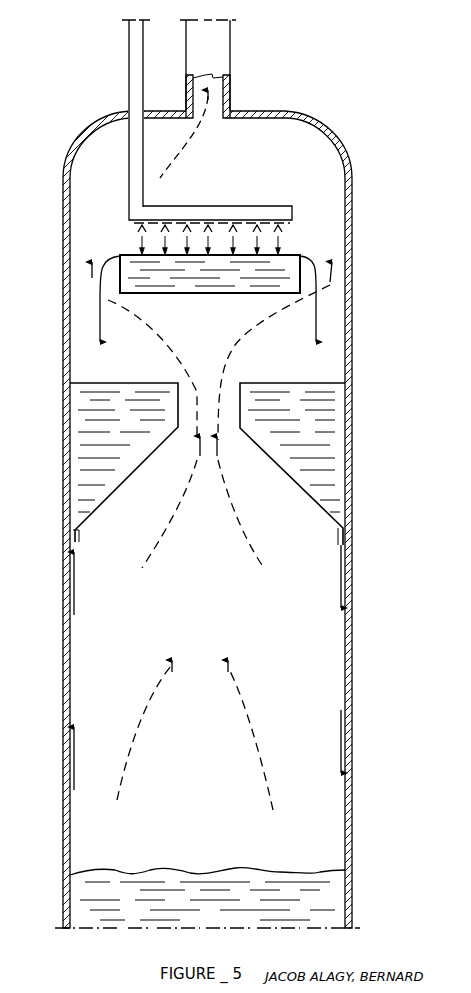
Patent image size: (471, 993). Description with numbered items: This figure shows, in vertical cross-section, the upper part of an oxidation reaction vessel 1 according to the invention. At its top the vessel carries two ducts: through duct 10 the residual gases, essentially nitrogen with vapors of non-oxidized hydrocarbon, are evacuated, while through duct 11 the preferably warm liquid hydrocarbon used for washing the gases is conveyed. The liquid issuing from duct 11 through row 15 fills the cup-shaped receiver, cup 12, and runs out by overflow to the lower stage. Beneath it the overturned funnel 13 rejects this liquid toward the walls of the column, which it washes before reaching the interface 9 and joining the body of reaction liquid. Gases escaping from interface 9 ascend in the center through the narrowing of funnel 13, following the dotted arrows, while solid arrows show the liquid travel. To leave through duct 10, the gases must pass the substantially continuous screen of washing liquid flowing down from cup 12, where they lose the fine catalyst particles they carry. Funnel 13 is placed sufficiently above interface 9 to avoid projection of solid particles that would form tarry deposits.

The vessel / reactor shell 1 is at (352, 598).
The interface 9 is at (262, 870).
The duct 10 is at (218, 48).
The duct 11 is at (140, 45).
The cup 12 is at (300, 282).
The funnel 13 is at (258, 445).
The row 15 is at (230, 207).